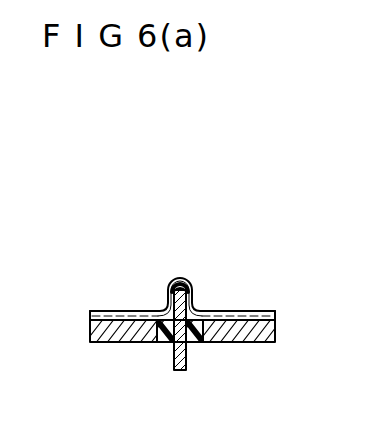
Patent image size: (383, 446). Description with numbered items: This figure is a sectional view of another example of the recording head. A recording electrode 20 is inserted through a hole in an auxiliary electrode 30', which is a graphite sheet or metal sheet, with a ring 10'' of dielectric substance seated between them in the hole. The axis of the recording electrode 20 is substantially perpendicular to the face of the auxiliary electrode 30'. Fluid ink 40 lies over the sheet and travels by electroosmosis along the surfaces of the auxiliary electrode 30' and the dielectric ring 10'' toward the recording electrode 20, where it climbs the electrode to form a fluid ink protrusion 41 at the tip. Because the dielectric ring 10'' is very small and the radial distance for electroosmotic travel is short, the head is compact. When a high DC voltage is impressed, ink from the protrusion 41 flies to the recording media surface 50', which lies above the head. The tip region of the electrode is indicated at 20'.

The recording media surface 50' is at (180, 233).
The fluid ink 40 is at (118, 310).
The fluid ink protrusion 41 is at (181, 279).
The recording electrode 20 is at (202, 334).
The pin head 20' is at (206, 266).
The auxiliary electrode 30' is at (180, 354).
The ring of dielectric substance 10'' is at (170, 354).